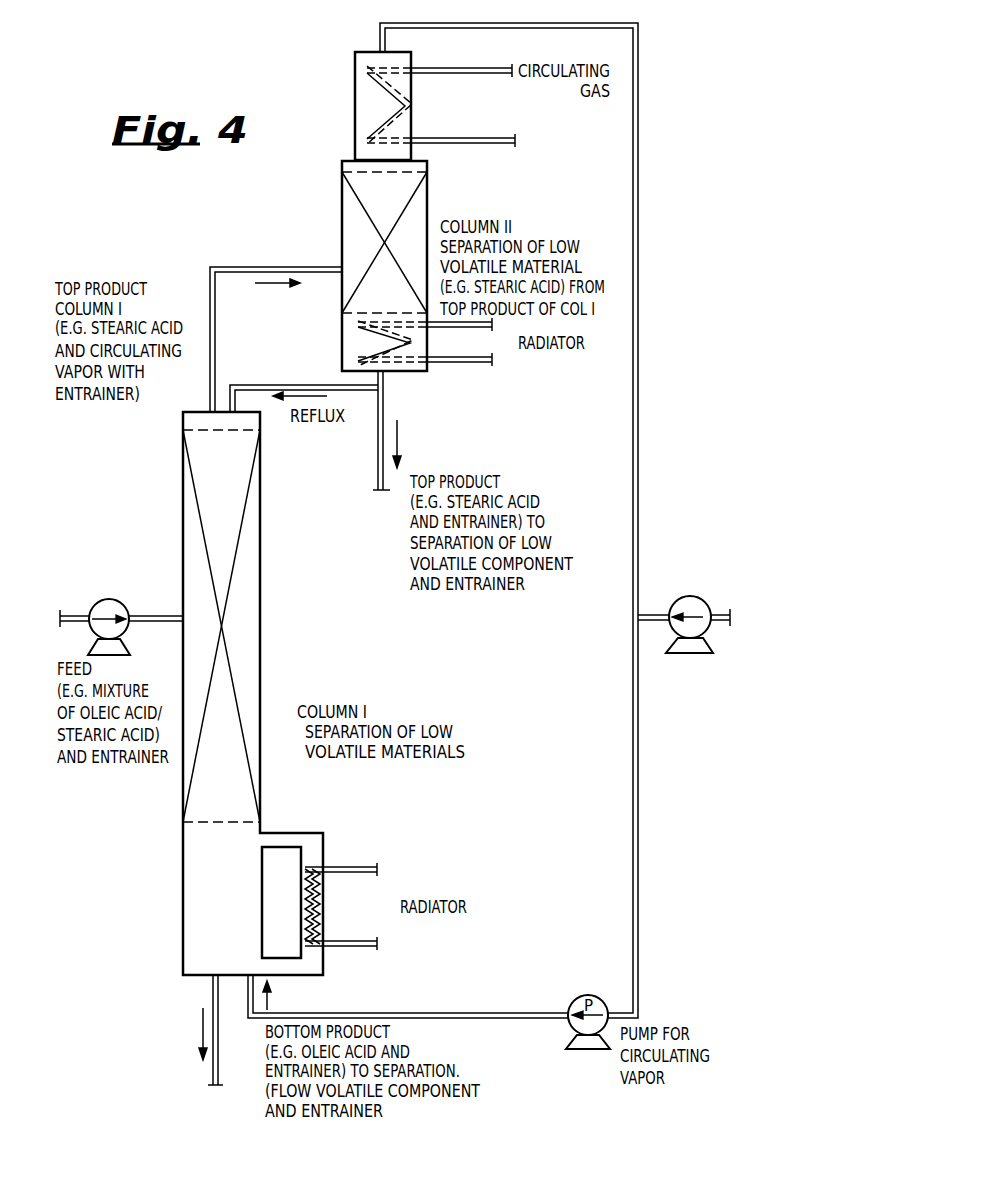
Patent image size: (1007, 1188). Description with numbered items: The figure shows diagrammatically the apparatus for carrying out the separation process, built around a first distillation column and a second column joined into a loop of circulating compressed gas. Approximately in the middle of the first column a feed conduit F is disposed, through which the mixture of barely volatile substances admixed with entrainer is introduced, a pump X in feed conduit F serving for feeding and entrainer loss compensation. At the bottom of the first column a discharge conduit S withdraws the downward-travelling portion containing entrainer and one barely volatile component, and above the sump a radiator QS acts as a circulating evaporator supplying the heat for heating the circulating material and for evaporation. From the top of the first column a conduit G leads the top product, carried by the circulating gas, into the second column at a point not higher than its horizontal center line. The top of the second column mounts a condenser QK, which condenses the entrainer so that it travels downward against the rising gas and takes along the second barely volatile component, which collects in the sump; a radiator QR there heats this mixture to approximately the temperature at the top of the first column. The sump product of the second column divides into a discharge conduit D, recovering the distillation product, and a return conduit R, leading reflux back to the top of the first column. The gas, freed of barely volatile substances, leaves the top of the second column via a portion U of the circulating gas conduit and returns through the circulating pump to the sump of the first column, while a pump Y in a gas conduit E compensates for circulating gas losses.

The conduit G is at (261, 267).
The return conduit R is at (267, 385).
The discharge conduit D is at (378, 470).
The pump X is at (101, 599).
The feed conduit F is at (155, 616).
The gas conduit E is at (655, 615).
The pump Y is at (701, 601).
The portion of circulating gas conduit U is at (638, 463).
The discharge conduit S is at (219, 1063).
The condenser QK is at (471, 74).
The radiator QR is at (480, 357).
The radiator QS is at (348, 873).